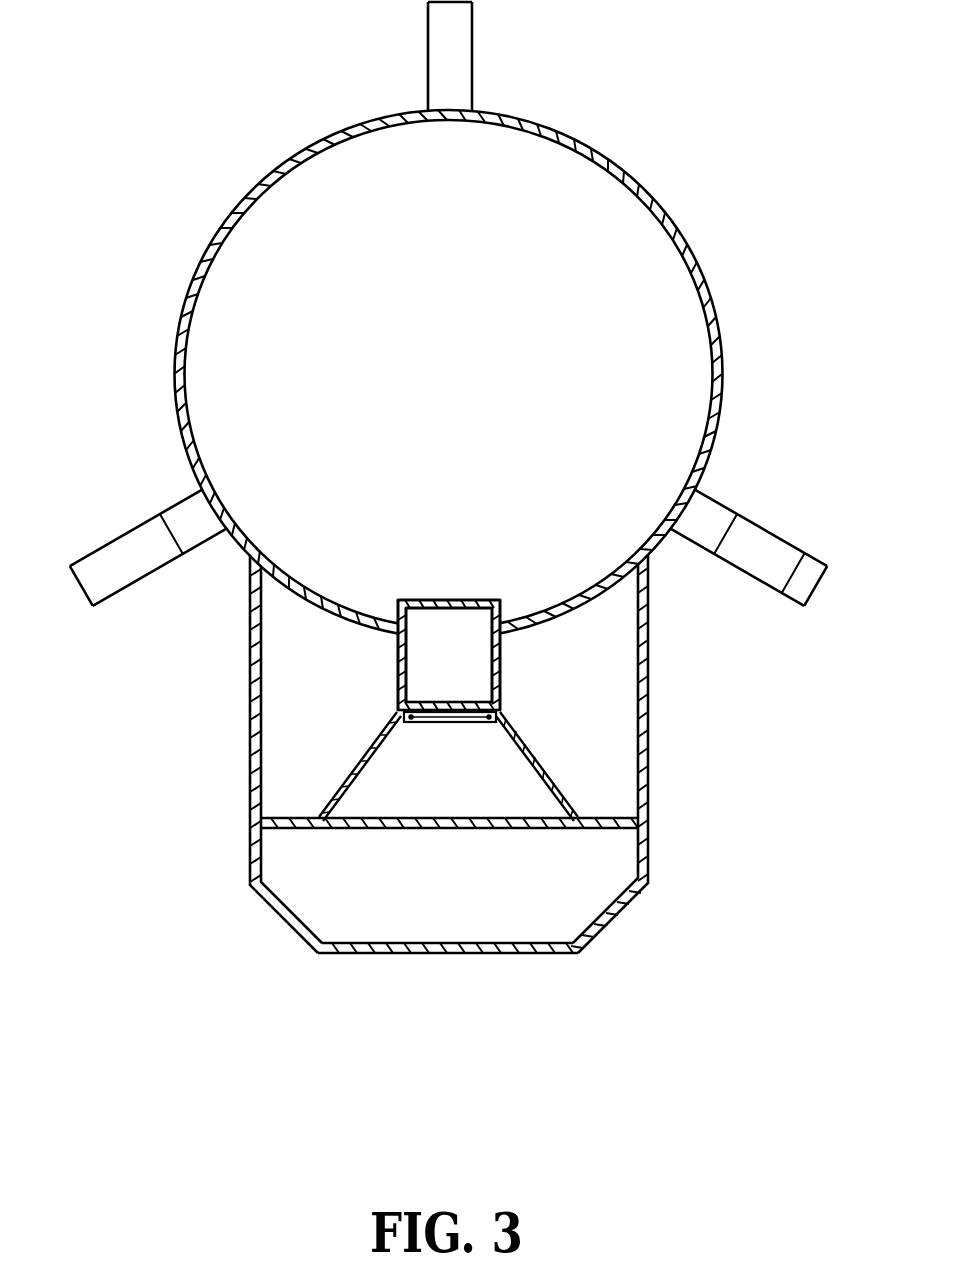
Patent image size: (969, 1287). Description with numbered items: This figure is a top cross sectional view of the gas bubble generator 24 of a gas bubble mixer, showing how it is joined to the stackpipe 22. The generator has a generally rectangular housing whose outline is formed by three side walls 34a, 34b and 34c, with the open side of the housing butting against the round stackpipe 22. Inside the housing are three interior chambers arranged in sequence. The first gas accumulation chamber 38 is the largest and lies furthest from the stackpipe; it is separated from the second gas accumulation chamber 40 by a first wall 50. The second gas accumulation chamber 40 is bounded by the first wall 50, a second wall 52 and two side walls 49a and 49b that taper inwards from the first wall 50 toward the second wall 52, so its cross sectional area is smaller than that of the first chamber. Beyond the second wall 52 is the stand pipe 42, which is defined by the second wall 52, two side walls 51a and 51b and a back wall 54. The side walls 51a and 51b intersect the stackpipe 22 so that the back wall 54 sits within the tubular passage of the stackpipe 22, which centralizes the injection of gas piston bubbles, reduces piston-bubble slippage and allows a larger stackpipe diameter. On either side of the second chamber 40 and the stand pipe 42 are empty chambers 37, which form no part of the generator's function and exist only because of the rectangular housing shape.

The stackpipe 22 is at (690, 245).
The gas bubble generator 24 is at (501, 800).
The side wall 34a is at (457, 955).
The side wall 34b is at (650, 795).
The side wall 34c is at (250, 795).
The empty chambers 37 is at (295, 695).
The first gas accumulation chamber 38 is at (466, 903).
The second gas accumulation chamber 40 is at (466, 768).
The stand pipe 42 is at (466, 700).
The side wall 49a is at (547, 772).
The side wall 49b is at (350, 772).
The first wall 50 is at (522, 830).
The side wall 51a is at (500, 666).
The side wall 51b is at (398, 666).
The second wall 52 is at (498, 720).
The back wall 54 is at (480, 600).